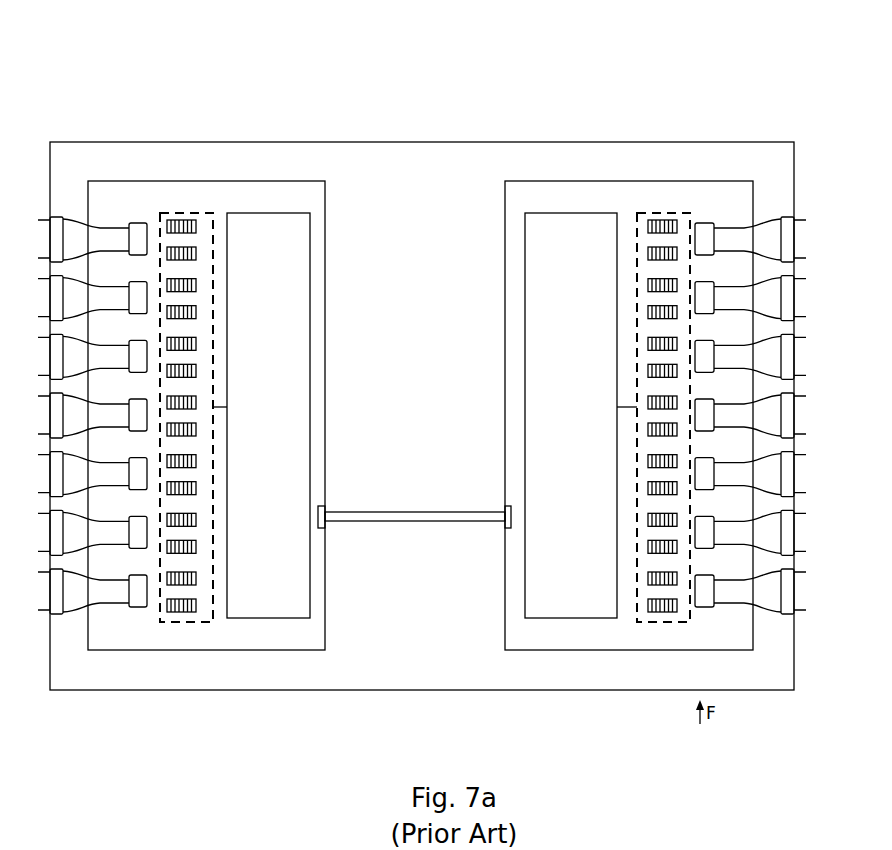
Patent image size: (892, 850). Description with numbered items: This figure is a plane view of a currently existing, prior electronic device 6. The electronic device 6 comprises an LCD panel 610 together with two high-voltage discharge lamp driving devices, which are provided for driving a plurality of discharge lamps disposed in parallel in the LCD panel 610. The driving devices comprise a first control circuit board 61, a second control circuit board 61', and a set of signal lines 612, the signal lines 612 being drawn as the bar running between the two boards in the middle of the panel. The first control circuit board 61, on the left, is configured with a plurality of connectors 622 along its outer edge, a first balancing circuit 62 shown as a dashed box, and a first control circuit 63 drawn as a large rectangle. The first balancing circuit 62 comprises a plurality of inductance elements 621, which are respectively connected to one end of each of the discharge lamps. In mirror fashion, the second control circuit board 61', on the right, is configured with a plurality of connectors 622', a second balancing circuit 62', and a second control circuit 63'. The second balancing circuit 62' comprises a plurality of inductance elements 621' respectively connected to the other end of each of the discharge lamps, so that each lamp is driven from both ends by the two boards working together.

The electronic device 6 is at (459, 84).
The LCD panel 610 is at (430, 141).
The set of signal lines 612 is at (415, 521).
The first control circuit board 61 is at (182, 381).
The second control circuit board 61' is at (629, 378).
The first balancing circuit 62 is at (212, 363).
The second balancing circuit 62' is at (670, 364).
The inductance element 621 is at (243, 362).
The inductance element 621' is at (697, 363).
The connector 622 is at (117, 359).
The connector 622' is at (746, 362).
The first control circuit 63 is at (303, 367).
The second control circuit 63' is at (584, 362).